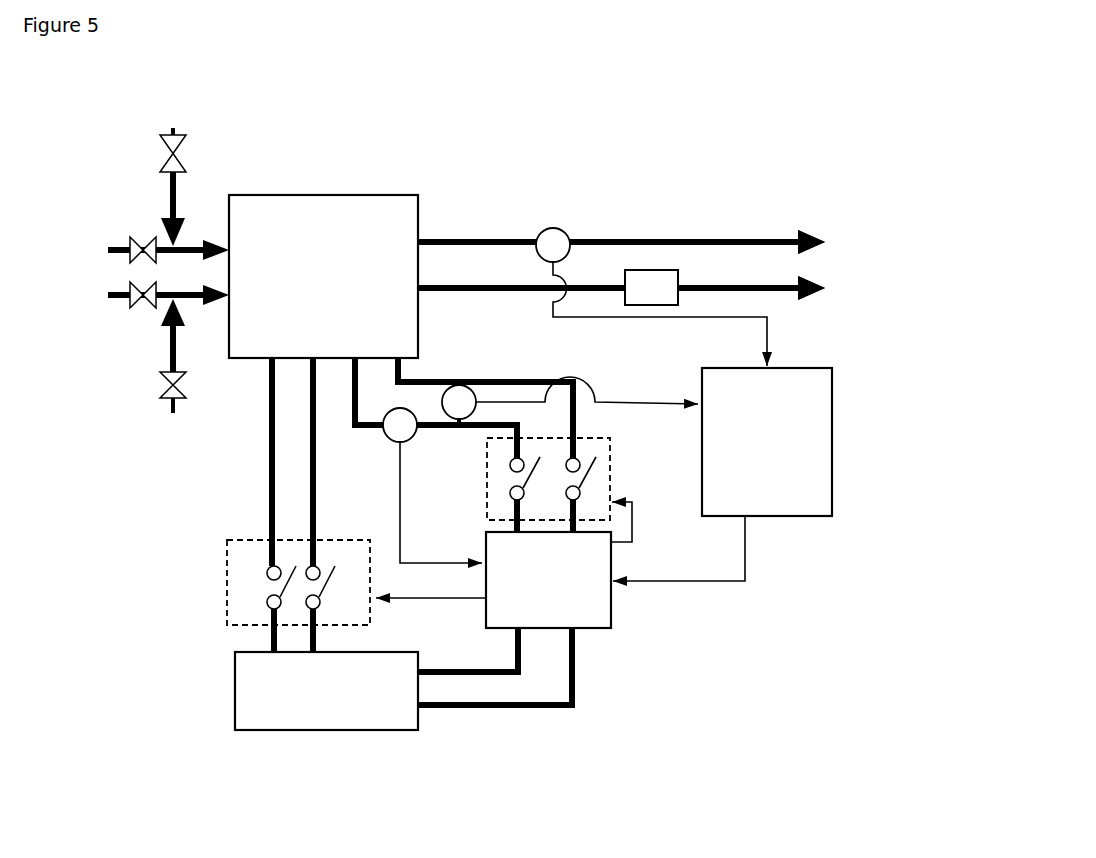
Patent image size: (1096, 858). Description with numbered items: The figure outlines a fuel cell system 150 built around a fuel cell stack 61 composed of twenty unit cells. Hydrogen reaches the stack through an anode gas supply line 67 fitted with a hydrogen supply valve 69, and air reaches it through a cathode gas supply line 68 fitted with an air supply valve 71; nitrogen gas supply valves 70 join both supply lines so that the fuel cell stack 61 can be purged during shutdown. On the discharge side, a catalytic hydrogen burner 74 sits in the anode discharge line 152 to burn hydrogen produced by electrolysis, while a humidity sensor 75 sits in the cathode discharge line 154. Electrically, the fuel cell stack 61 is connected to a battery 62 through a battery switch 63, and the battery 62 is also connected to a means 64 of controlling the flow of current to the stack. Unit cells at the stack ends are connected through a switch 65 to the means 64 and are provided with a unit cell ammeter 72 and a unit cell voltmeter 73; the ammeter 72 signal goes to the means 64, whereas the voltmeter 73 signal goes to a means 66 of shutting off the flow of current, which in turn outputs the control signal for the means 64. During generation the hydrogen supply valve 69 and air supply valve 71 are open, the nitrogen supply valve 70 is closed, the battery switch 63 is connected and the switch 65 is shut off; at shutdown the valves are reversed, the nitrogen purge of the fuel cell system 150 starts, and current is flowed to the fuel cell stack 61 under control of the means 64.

The fuel cell stack 61 is at (302, 195).
The battery 62 is at (316, 736).
The battery switch 63 is at (224, 578).
The means of controlling the flow of current to the fuel cell stack 64 is at (603, 639).
The switch 65 is at (605, 412).
The means of shutting off the flow of current to the fuel cell stack 66 is at (796, 528).
The anode gas supply line 67 is at (114, 302).
The cathode gas supply line 68 is at (106, 240).
The hydrogen supply valve 69 is at (142, 312).
The nitrogen gas supply valve 70 is at (189, 158).
The air supply valve 71 is at (137, 236).
The unit cell ammeter 72 is at (409, 406).
The unit cell voltmeter 73 is at (470, 384).
The catalytic hydrogen burner 74 is at (657, 268).
The humidity sensor 75 is at (560, 226).
The fuel cell system 150 is at (740, 212).
The anode discharge line 152 is at (784, 298).
The cathode discharge line 154 is at (768, 234).